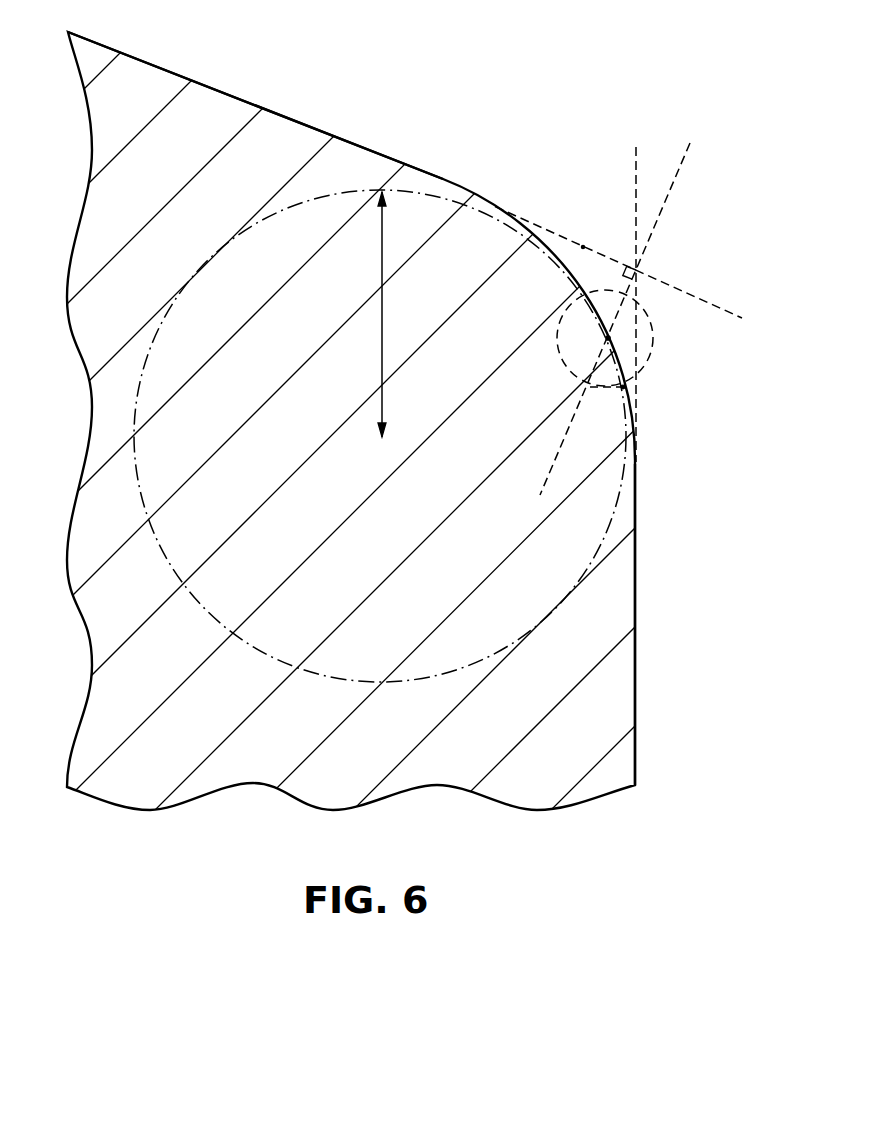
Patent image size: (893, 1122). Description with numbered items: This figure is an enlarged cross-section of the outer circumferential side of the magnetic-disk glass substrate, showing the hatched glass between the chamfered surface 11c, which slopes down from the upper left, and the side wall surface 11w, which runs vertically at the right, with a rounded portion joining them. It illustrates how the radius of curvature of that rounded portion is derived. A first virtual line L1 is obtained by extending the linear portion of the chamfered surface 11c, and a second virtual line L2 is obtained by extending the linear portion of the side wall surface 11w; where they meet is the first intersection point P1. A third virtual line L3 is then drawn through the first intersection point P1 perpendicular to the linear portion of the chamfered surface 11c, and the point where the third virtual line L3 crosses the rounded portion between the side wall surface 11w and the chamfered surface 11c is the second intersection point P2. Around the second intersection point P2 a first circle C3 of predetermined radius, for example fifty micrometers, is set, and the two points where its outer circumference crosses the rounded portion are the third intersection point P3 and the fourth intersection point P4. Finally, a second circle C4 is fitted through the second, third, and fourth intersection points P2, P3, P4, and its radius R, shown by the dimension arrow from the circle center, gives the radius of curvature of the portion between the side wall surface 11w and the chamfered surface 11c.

The chamfered surface 11c is at (297, 121).
The side wall surface 11w is at (637, 586).
The second circle C4 is at (363, 188).
The first circle C3 is at (652, 322).
The radius of the second circle R is at (371, 314).
The first virtual line L1 is at (737, 318).
The second virtual line L2 is at (635, 172).
The third virtual line L3 is at (681, 177).
The first intersection point P1 is at (633, 270).
The second intersection point P2 is at (608, 338).
The third intersection point P3 is at (583, 247).
The fourth intersection point P4 is at (623, 387).